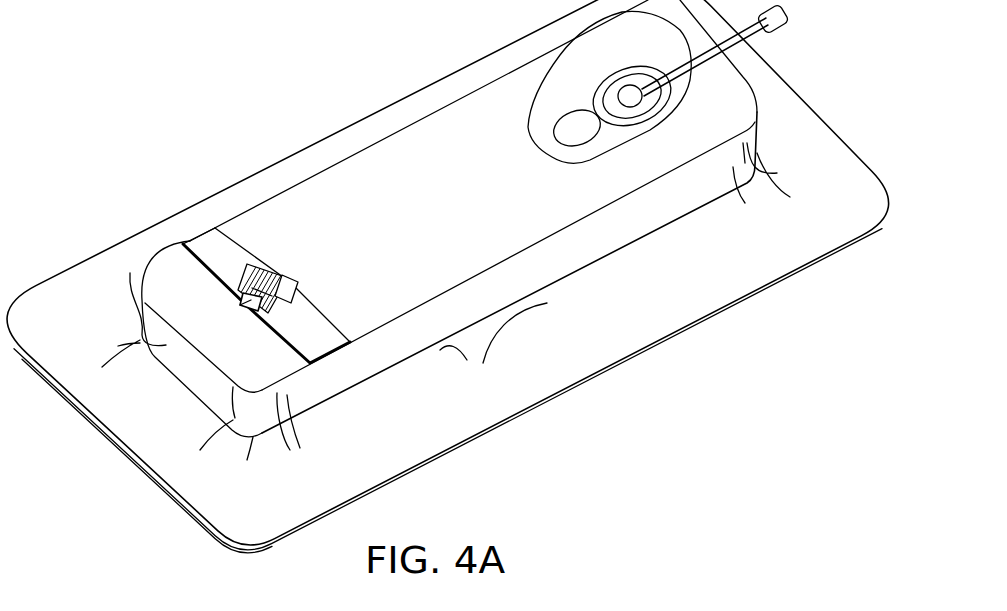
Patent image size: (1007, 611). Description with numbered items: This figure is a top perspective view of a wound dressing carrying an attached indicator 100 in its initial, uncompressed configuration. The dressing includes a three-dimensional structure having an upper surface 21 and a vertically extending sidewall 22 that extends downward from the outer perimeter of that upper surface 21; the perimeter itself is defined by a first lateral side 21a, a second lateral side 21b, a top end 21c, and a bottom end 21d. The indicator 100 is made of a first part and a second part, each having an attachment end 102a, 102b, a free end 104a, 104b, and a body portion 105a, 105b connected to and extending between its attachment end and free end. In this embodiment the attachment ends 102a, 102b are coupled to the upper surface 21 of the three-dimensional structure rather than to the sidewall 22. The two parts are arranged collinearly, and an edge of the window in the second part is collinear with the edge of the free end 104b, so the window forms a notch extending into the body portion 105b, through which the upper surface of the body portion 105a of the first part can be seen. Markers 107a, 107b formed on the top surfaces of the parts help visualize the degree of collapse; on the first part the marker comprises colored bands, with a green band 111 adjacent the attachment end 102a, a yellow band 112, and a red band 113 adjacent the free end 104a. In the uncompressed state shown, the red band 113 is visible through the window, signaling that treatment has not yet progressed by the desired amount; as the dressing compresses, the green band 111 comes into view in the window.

The upper surface 21 is at (473, 127).
The first lateral side 21a is at (345, 157).
The second lateral side 21b is at (590, 216).
The top end 21c is at (741, 79).
The bottom end 21d is at (201, 355).
The sidewall 22 is at (677, 198).
The indicator 100 is at (242, 205).
The attachment end 102a is at (188, 240).
The attachment end 102b is at (335, 356).
The free end 104a is at (320, 293).
The free end 104b is at (282, 277).
The body portion 105a is at (207, 238).
The body portion 105b is at (325, 330).
The first fold region 107a is at (142, 317).
The second fold region 107b is at (250, 305).
The green band 111 is at (258, 298).
The yellow band 112 is at (263, 293).
The red band 113 is at (266, 286).